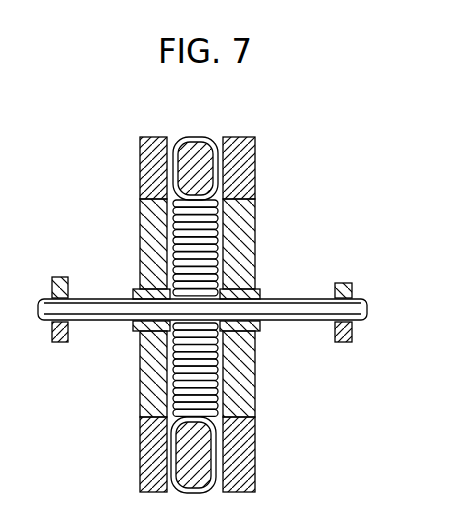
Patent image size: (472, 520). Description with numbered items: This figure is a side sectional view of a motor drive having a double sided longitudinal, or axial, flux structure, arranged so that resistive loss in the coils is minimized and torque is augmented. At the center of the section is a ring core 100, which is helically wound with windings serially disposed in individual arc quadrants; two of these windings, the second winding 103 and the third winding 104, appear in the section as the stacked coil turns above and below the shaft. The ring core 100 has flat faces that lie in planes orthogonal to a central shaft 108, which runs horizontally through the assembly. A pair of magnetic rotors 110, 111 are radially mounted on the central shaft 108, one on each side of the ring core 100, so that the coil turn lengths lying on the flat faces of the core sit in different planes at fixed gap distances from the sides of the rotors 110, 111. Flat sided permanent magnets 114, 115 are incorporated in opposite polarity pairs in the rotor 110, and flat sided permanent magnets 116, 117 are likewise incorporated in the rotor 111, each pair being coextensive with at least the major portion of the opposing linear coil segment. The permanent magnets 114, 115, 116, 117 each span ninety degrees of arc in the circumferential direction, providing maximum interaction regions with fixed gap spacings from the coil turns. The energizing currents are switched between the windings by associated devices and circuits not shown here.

The ring core 100 is at (204, 146).
The second winding 103 is at (212, 364).
The third winding 104 is at (212, 230).
The central shaft 108 is at (370, 316).
The magnetic rotor 110 is at (143, 257).
The magnetic rotor 111 is at (252, 258).
The flat sided permanent magnet 114 is at (143, 170).
The flat sided permanent magnet 115 is at (145, 462).
The flat sided permanent magnet 116 is at (252, 172).
The flat sided permanent magnet 117 is at (247, 465).